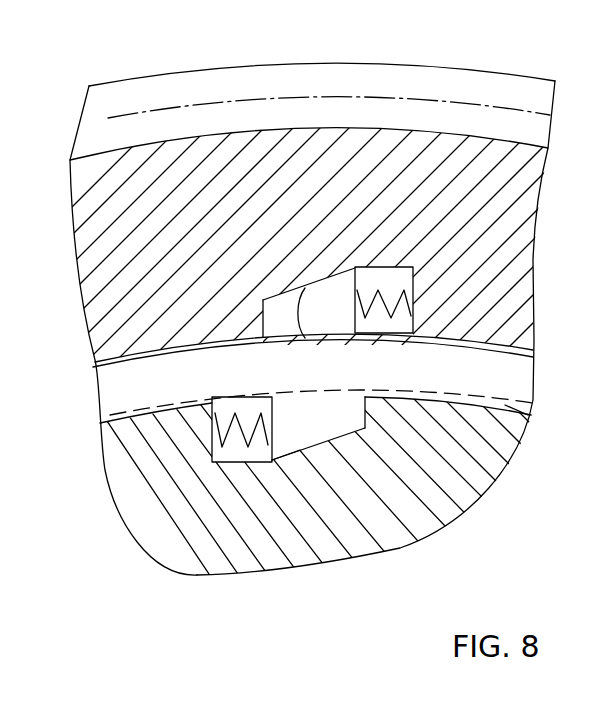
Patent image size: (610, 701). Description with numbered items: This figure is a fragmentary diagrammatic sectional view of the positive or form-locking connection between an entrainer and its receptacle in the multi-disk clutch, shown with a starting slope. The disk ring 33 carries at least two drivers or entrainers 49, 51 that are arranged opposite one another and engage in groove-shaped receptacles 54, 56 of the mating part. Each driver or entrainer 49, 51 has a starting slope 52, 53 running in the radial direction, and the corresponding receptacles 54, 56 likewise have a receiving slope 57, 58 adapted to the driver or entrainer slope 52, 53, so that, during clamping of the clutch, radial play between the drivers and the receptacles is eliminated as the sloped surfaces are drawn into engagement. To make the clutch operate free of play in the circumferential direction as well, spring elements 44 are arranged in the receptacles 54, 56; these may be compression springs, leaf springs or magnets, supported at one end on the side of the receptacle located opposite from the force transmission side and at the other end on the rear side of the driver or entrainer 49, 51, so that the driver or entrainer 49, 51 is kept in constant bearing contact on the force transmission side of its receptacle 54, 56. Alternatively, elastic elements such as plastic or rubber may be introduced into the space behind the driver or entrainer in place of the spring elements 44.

The disk ring 33 is at (467, 378).
The spring element 44 is at (392, 336).
The driver 49 is at (332, 312).
The entrainer 51 is at (340, 410).
The starting slope 52 is at (282, 297).
The starting slope 53 is at (290, 452).
The receptacle 54 is at (415, 281).
The receptacle 56 is at (247, 463).
The receiving slope 57 is at (305, 338).
The receiving slope 58 is at (323, 440).